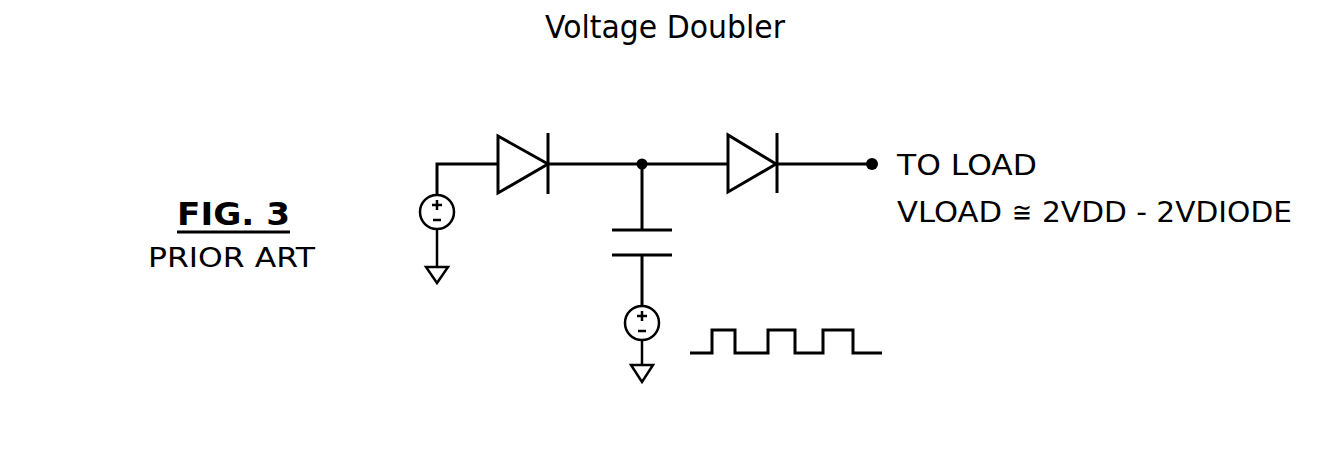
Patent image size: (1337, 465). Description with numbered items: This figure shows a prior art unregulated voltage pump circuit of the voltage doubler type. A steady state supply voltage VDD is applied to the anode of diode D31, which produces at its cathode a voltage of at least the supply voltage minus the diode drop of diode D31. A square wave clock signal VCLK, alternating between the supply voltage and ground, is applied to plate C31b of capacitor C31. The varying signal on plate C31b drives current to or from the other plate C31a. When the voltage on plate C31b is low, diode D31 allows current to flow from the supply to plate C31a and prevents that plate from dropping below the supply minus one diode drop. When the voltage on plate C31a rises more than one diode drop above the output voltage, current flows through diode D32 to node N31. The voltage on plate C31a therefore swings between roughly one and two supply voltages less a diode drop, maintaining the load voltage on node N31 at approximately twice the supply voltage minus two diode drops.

The diode D31 is at (517, 188).
The diode D32 is at (750, 143).
The capacitor C31 is at (646, 235).
The plate of capacitor C31a is at (623, 230).
The plate of capacitor C31b is at (655, 258).
The node N31 is at (872, 158).
The Vdd voltage VDD is at (397, 239).
The square wave clock signal VCLK is at (753, 339).